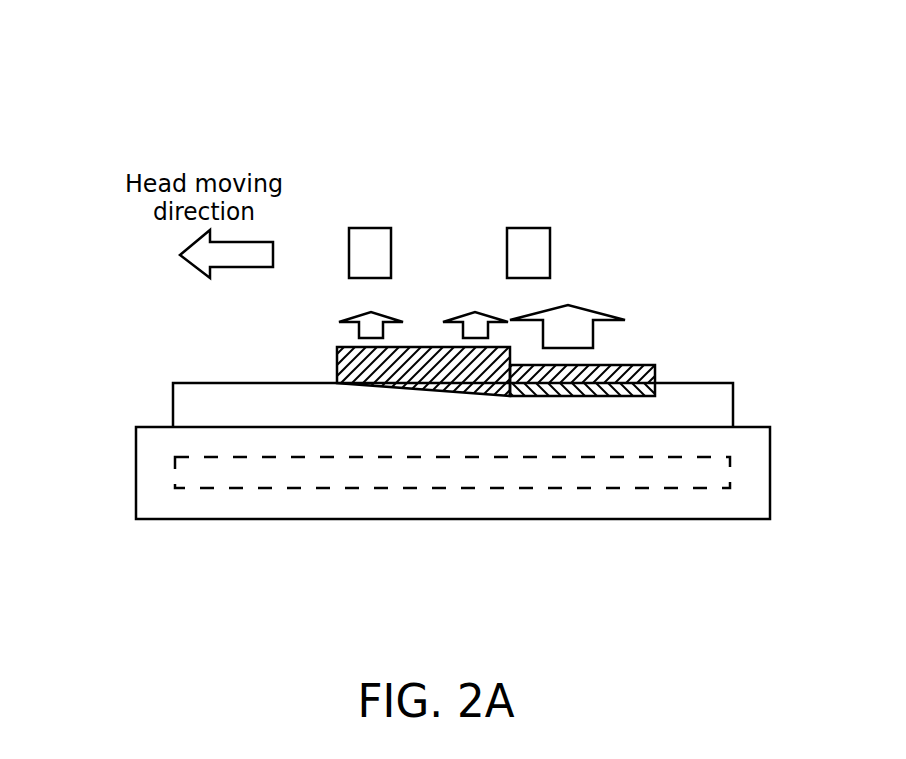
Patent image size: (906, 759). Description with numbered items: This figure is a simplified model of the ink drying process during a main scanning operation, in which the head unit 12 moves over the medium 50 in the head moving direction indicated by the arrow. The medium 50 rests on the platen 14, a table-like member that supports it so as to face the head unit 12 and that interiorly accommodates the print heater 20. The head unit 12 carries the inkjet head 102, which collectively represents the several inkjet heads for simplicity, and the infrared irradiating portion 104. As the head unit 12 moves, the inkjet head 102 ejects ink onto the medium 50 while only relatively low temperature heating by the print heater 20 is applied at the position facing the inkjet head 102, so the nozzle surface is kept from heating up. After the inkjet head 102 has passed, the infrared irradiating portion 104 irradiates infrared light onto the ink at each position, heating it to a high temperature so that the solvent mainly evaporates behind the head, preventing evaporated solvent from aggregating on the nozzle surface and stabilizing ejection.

The head unit 12 is at (358, 77).
The inkjet head 102 is at (375, 228).
The infrared irradiating portion 104 is at (530, 228).
The medium 50 is at (173, 405).
The platen 14 is at (152, 505).
The print heater 20 is at (388, 488).